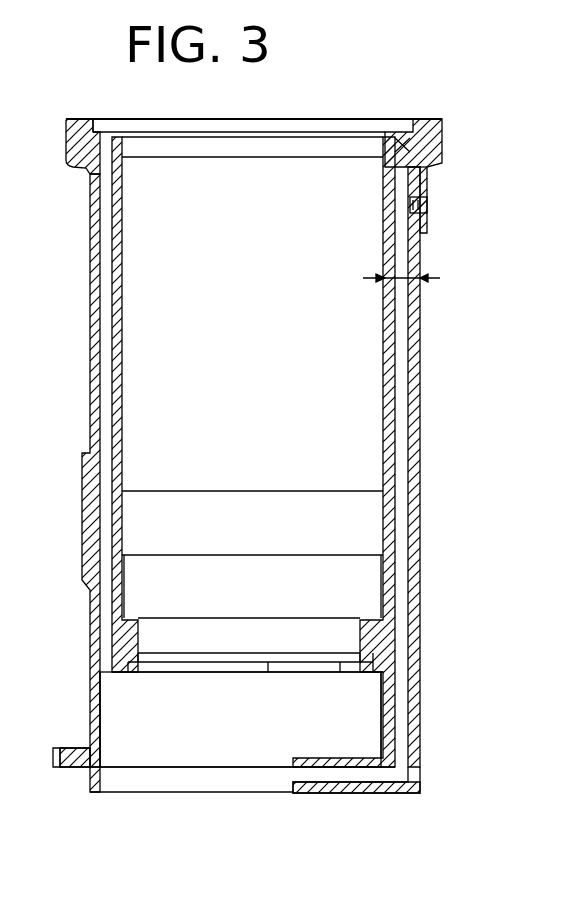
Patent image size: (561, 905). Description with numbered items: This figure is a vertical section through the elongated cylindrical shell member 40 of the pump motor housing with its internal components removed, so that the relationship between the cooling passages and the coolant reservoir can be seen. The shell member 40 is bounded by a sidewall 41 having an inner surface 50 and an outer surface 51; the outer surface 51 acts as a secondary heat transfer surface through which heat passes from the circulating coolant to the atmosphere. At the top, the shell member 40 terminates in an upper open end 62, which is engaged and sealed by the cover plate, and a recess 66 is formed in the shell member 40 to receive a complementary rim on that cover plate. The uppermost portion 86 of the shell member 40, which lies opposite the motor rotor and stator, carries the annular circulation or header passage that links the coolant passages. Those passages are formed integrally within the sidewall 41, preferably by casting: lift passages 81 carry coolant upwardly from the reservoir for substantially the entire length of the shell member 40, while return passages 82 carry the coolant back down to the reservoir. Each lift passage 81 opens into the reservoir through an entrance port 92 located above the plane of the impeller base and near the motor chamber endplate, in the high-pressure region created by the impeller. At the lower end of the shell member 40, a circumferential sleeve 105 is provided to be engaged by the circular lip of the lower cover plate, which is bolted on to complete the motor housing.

The shell member 40 is at (427, 114).
The sidewall 41 is at (400, 278).
The inner surface 50 is at (385, 357).
The outer surface 51 is at (420, 378).
The upper open end 62 is at (128, 119).
The recess 66 is at (392, 150).
The lift passage 81 is at (100, 405).
The return passage 82 is at (398, 733).
The uppermost portion 86 is at (95, 185).
The entrance port 92 is at (100, 670).
The circumferential sleeve 105 is at (92, 780).